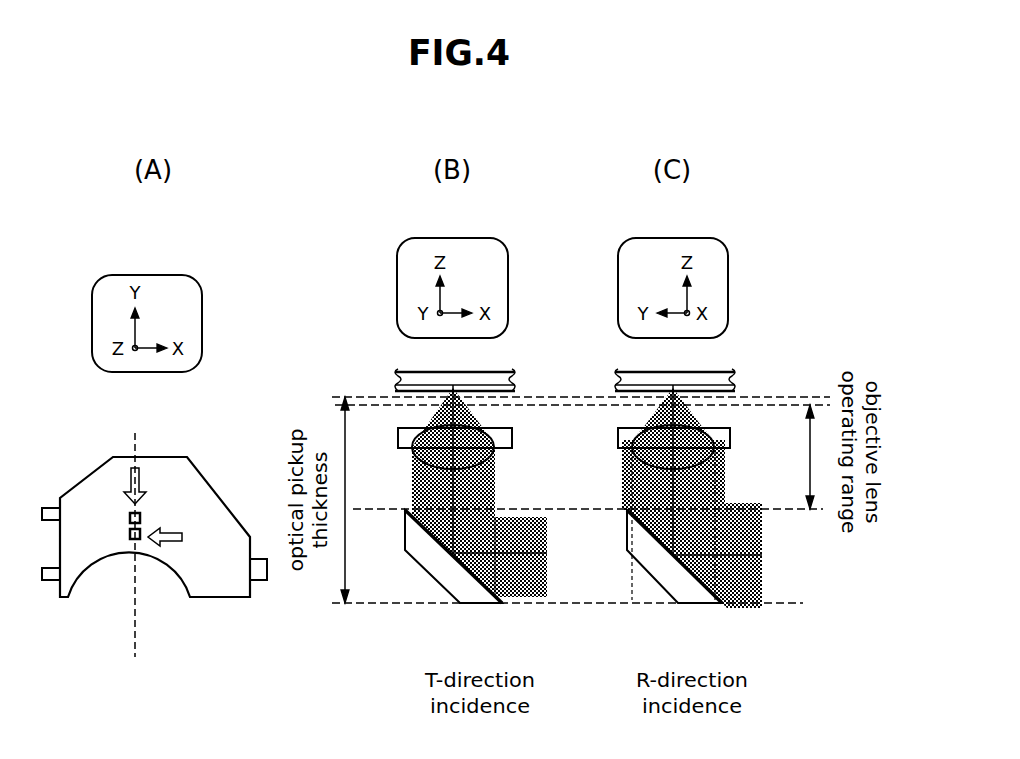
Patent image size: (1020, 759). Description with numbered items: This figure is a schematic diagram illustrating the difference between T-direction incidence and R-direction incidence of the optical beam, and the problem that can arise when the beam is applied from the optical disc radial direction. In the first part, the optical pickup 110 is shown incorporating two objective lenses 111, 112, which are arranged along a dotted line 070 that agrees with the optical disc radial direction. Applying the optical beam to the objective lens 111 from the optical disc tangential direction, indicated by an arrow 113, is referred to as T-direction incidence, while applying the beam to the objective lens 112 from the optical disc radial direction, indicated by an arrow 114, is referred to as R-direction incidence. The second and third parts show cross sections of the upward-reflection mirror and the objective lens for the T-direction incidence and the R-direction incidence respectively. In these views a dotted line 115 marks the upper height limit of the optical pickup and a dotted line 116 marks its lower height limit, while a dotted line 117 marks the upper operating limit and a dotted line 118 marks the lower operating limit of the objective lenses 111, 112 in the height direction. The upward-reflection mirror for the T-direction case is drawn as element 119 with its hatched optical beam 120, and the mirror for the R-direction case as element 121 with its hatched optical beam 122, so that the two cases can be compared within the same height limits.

The optical pickup 110 is at (93, 498).
The objective lens 111 is at (129, 545).
The objective lens 112 is at (128, 520).
The arrow 113 is at (172, 545).
The arrow 114 is at (140, 473).
The dotted line 070 is at (137, 632).
The dotted line 115 is at (332, 397).
The dotted line 116 is at (798, 604).
The dotted line 117 is at (755, 406).
The dotted line 118 is at (778, 510).
The rising mirror for T-direction incidence 119 is at (440, 568).
The light beam for T-direction incidence 120 is at (525, 600).
The rising mirror for R-direction incidence 121 is at (650, 577).
The light beam for R-direction incidence 122 is at (745, 609).